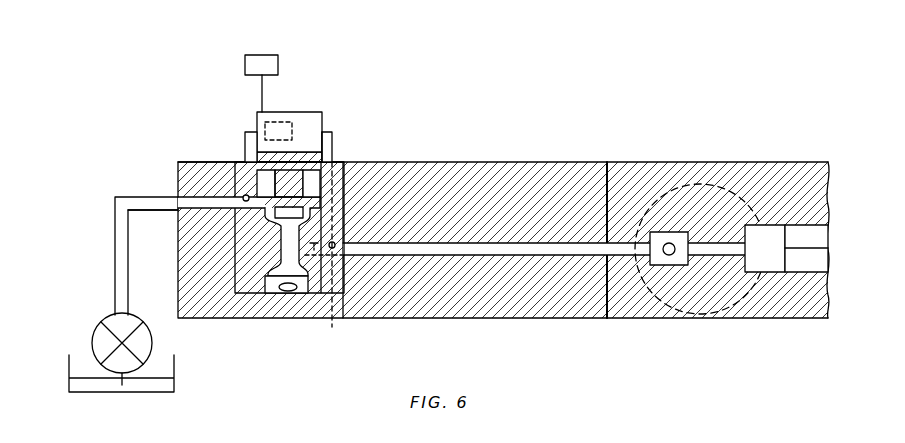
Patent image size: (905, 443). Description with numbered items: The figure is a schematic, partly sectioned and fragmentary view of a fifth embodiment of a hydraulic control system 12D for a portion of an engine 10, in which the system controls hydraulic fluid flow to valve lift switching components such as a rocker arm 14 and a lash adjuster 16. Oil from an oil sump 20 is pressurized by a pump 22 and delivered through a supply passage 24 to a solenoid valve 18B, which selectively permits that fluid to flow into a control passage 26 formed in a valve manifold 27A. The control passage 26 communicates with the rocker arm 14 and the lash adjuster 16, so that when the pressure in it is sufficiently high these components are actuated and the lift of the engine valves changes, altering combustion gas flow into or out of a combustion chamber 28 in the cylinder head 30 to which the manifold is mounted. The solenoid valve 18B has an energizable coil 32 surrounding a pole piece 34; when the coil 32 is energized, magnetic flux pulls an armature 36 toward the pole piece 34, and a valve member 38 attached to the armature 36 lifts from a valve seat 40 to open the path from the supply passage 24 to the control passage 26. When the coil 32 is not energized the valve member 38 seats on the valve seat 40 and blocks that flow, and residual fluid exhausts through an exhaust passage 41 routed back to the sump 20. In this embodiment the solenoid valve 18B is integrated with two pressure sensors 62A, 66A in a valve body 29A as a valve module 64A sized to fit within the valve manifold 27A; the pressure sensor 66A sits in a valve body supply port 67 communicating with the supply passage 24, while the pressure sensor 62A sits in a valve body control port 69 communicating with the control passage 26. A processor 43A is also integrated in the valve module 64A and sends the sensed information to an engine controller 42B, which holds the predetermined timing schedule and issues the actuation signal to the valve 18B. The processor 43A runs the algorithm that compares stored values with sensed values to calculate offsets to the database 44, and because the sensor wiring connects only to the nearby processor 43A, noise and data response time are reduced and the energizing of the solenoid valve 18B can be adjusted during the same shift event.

The engine 10 is at (660, 52).
The hydraulic control system 12D is at (500, 45).
The rocker arm 14 is at (800, 225).
The lash adjuster 16 is at (670, 272).
The solenoid valve 18B is at (208, 128).
The oil sump 20 is at (69, 365).
The pump 22 is at (105, 318).
The supply passage 24 is at (115, 258).
The control passage 26 is at (426, 255).
The valve manifold 27A is at (463, 162).
The combustion chamber 28 is at (760, 174).
The valve body 29A is at (337, 162).
The cylinder head 30 is at (705, 162).
The coil 32 is at (322, 200).
The pole piece 34 is at (285, 178).
The armature 36 is at (232, 200).
The valve member 38 is at (292, 208).
The valve seat 40 is at (333, 242).
The exhaust passage 41 is at (288, 291).
The engine controller 42B is at (245, 65).
The processor 43A is at (302, 110).
The database 44 is at (282, 121).
The pressure sensor 62A is at (332, 248).
The valve module 64A is at (215, 103).
The pressure sensor 66A is at (180, 222).
The valve body supply port 67 is at (243, 197).
The valve body control port 69 is at (337, 255).